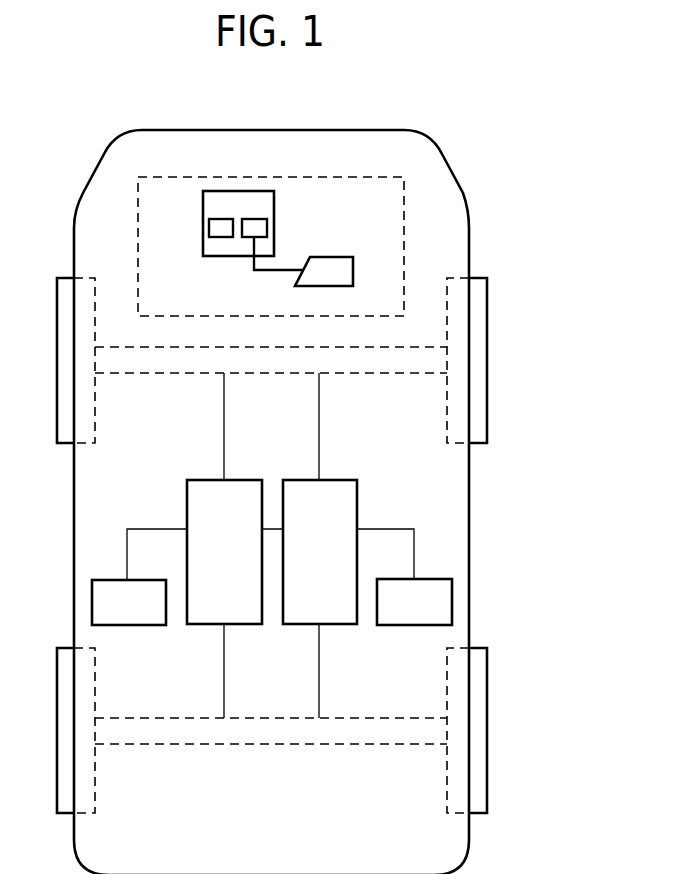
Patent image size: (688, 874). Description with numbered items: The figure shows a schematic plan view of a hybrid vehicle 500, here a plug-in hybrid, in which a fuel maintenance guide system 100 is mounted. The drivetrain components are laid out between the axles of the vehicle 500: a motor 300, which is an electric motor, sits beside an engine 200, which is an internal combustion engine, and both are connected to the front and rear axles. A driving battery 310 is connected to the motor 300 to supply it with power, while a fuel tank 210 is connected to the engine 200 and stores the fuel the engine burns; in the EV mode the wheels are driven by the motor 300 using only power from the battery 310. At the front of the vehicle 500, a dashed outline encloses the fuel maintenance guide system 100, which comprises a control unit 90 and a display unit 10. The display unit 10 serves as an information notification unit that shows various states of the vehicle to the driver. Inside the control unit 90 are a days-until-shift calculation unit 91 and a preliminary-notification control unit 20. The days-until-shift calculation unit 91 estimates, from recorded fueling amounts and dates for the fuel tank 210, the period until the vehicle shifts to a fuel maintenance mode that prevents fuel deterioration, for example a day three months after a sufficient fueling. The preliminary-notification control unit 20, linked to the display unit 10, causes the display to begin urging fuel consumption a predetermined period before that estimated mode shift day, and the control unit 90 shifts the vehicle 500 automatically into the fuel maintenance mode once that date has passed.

The hybrid vehicle 500 is at (353, 110).
The fuel maintenance guide system 100 is at (202, 177).
The control unit 90 is at (203, 207).
The days-until-shift calculation unit 91 is at (209, 232).
The preliminary-notification control unit 20 is at (258, 230).
The display unit 10 is at (333, 257).
The motor 300 is at (203, 566).
The engine 200 is at (299, 566).
The driving battery 310 is at (108, 616).
The fuel tank 210 is at (393, 616).